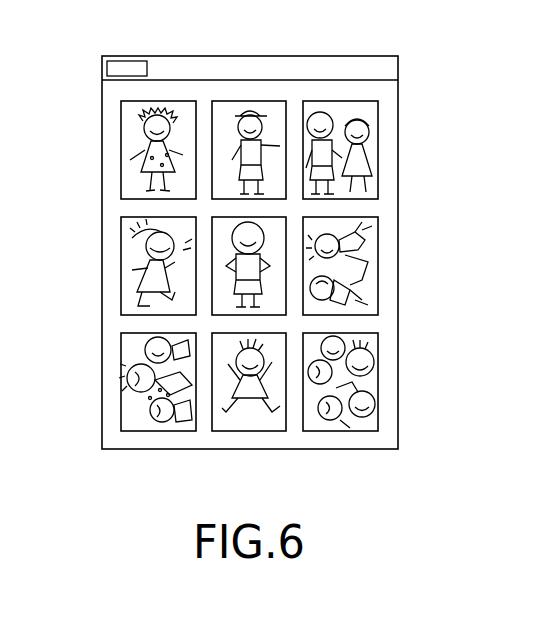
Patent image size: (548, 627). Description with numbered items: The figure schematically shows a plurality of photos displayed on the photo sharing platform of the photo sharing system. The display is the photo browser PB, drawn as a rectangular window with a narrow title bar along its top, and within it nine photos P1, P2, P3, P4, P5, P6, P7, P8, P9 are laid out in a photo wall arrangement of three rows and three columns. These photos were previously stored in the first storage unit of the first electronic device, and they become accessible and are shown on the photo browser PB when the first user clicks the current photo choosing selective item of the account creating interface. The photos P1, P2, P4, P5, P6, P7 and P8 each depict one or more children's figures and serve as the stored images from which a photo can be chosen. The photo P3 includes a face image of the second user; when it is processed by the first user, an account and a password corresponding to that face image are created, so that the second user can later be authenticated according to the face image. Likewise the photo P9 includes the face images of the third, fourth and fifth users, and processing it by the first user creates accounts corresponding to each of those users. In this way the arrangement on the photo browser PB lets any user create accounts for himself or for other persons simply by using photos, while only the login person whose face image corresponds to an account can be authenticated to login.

The photo browser PB is at (206, 48).
The photo P1 is at (128, 182).
The photo P2 is at (250, 108).
The photo P3 is at (368, 188).
The photo P4 is at (138, 267).
The photo P5 is at (270, 230).
The photo P6 is at (370, 247).
The photo P7 is at (128, 343).
The photo P8 is at (252, 422).
The photo P9 is at (365, 383).